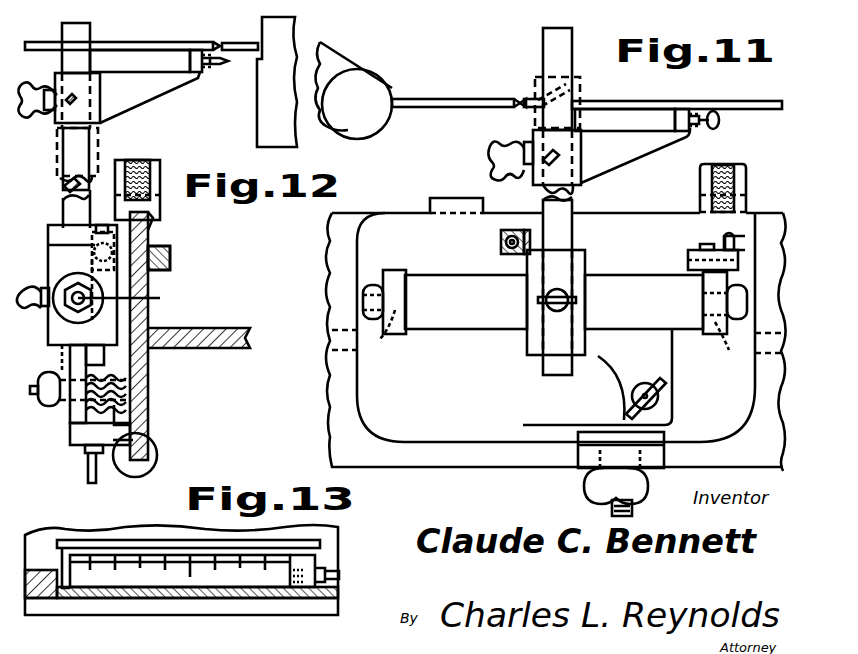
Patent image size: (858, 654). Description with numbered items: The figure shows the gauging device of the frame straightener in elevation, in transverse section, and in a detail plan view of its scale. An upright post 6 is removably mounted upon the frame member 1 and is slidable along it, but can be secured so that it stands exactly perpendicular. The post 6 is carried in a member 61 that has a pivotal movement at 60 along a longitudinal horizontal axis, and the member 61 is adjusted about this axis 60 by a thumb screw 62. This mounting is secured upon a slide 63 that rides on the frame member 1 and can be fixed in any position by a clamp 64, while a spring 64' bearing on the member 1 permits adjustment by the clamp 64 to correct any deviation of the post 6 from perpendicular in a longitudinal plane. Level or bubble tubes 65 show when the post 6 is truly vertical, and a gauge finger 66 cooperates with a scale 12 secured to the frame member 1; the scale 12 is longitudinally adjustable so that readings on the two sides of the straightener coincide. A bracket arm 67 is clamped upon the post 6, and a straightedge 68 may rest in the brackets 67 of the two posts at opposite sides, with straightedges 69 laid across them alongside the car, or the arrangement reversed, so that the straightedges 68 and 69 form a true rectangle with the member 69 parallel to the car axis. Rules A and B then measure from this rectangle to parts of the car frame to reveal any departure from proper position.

In FIG. 12, the frame member 1 is at (148, 352).
In FIG. 13, the frame member 1 is at (202, 610).
In FIG. 11, the frame member 1 is at (440, 466).
In FIG. 12, the upright post 6 is at (88, 35).
In FIG. 11, the upright post 6 is at (550, 47).
In FIG. 12, the scale 12 is at (172, 256).
In FIG. 13, the scale 12 is at (328, 549).
In FIG. 12, the pivotal axis 60 is at (135, 300).
In FIG. 11, the pivotal axis 60 is at (555, 322).
In FIG. 12, the member 61 is at (62, 329).
In FIG. 11, the member 61 is at (624, 292).
In FIG. 12, the thumb screw 62 is at (48, 408).
In FIG. 11, the thumb screw 62 is at (662, 388).
In FIG. 12, the slide 63 is at (132, 416).
In FIG. 11, the slide 63 is at (484, 399).
In FIG. 12, the clamp 64 is at (166, 455).
In FIG. 11, the clamp 64 is at (596, 474).
In FIG. 12, the spring 64' is at (162, 178).
In FIG. 11, the spring 64' is at (702, 188).
In FIG. 11, the level or bubble tubes 65 is at (498, 244).
In FIG. 12, the gauge finger 66 is at (162, 240).
In FIG. 12, the bracket arm 67 is at (146, 99).
In FIG. 11, the bracket arm 67 is at (626, 162).
In FIG. 11, the straightedge 68 is at (629, 118).
In FIG. 12, the straightedge 69 is at (146, 62).
In FIG. 11, the rule A is at (458, 100).
In FIG. 12, the rule B is at (238, 46).